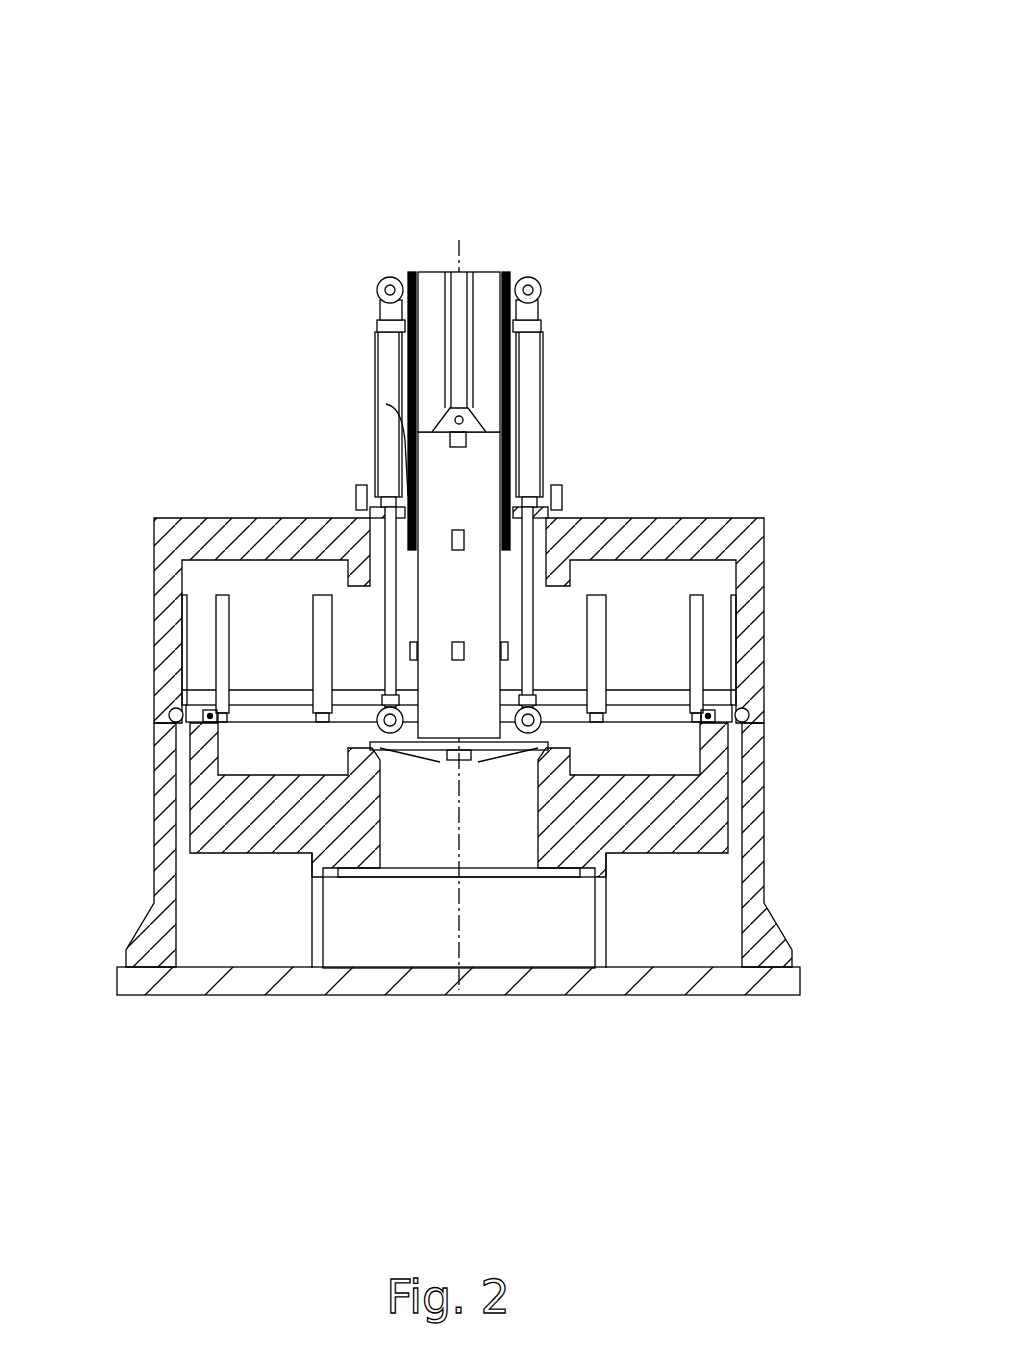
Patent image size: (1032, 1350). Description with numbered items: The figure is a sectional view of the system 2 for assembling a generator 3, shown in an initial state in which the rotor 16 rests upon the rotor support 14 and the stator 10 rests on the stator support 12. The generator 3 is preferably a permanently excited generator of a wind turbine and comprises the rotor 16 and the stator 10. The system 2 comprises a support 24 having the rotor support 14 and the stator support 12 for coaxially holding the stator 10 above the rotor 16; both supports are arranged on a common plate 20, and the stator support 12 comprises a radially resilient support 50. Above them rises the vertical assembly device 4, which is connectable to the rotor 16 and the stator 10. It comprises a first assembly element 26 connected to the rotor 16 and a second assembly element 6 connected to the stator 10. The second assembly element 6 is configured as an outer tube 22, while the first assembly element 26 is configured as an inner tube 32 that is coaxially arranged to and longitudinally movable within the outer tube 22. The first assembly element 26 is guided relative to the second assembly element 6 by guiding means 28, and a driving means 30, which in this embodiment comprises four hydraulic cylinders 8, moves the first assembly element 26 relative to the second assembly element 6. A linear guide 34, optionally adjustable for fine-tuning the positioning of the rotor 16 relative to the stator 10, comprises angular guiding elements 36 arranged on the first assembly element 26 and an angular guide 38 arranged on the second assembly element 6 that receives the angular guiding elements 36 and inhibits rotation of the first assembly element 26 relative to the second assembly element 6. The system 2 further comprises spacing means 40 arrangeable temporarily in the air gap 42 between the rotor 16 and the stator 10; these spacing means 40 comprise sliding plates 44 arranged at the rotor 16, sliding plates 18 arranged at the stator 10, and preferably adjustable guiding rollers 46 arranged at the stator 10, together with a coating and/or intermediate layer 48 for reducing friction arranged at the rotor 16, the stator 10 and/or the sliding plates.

The system 2 is at (185, 97).
The generator 3 is at (133, 506).
The vertical assembly device 4 is at (436, 219).
The second assembly element 6 is at (490, 299).
The hydraulic cylinders 8 is at (392, 472).
The stator 10 is at (752, 662).
The stator support 12 is at (758, 782).
The rotor support 14 is at (594, 925).
The rotor 16 is at (713, 840).
The sliding plates 18 is at (222, 604).
The common plate 20 is at (708, 967).
The outer tube 22 is at (491, 282).
The support 24 is at (150, 1028).
The first assembly element 26 is at (523, 460).
The guiding means 28 is at (470, 268).
The driving means 30 is at (488, 486).
The inner tube 32 is at (486, 452).
The linear guide 34 is at (466, 362).
The angular guiding elements 36 is at (445, 424).
The angular guide 38 is at (456, 645).
The spacing means 40 is at (637, 622).
The air gap 42 is at (740, 752).
The sliding plates 44 is at (173, 784).
The guiding rollers 46 is at (172, 714).
The coating and/or intermediate layer 48 is at (214, 647).
The radially resilient support 50 is at (757, 717).